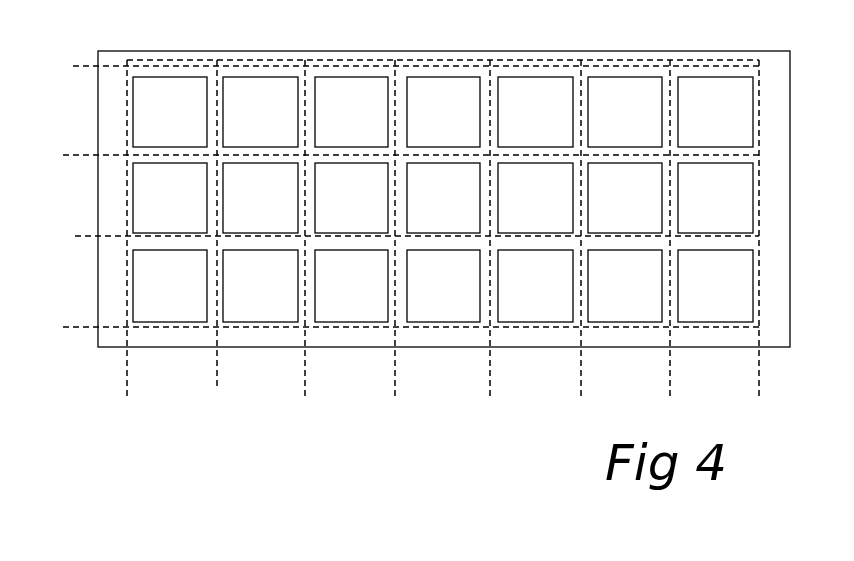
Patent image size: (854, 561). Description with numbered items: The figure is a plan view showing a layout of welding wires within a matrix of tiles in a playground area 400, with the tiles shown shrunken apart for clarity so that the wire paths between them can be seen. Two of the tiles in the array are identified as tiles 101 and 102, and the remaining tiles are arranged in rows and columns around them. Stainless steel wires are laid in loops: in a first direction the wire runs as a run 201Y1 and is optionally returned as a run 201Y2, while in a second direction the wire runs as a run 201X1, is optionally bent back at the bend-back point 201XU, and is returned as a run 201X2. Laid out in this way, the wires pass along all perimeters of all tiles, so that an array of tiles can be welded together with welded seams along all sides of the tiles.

The display panel / substrate 400 is at (437, 52).
The bend-back point of wire in second direction 201XU is at (172, 58).
The wire run in second direction 201X1 is at (126, 386).
The returned wire run in second direction 201X2 is at (215, 382).
The wire run in first direction 201Y1 is at (75, 236).
The returned wire run in first direction 201Y2 is at (70, 327).
The first pixel/element region 101 is at (180, 298).
The second pixel/element region 102 is at (272, 294).